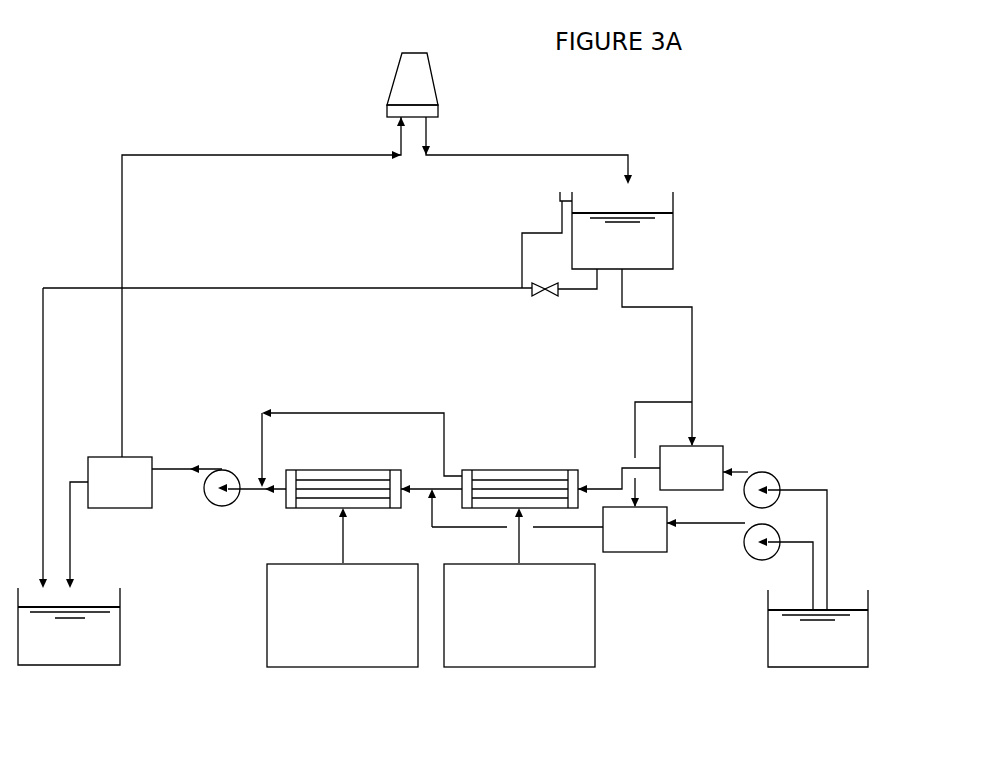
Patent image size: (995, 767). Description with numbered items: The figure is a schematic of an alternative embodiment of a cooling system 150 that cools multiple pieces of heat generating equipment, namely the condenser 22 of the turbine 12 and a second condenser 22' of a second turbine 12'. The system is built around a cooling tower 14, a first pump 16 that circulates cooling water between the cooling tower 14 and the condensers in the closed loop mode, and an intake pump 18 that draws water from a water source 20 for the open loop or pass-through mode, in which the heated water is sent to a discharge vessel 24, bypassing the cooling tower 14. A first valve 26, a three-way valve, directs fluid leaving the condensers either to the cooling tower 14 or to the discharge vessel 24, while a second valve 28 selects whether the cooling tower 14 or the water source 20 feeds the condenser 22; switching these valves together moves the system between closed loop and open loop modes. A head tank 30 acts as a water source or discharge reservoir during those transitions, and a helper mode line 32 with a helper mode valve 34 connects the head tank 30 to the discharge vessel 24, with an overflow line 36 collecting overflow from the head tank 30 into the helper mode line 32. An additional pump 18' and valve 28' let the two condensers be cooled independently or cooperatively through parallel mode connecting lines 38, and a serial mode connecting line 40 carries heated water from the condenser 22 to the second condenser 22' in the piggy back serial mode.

The cooling system 150 is at (124, 54).
The cooling tower 14 is at (426, 94).
The head tank 30 is at (634, 259).
The overflow line 36 is at (520, 247).
The helper mode line 32 is at (318, 287).
The helper mode valve 34 is at (551, 293).
The second valve 28 is at (705, 450).
The valve 28' is at (639, 548).
The intake pump 18 is at (786, 481).
The additional pump 18' is at (752, 557).
The water source 20 is at (845, 649).
The condenser 22 is at (520, 473).
The second condenser 22' is at (343, 473).
The serial mode connecting line 40 is at (437, 488).
The parallel mode connecting lines 38 is at (450, 413).
The first valve 26 is at (142, 455).
The first pump 16 is at (223, 507).
The discharge vessel 24 is at (95, 649).
The turbine 12 is at (519, 615).
The second turbine 12' is at (342, 615).